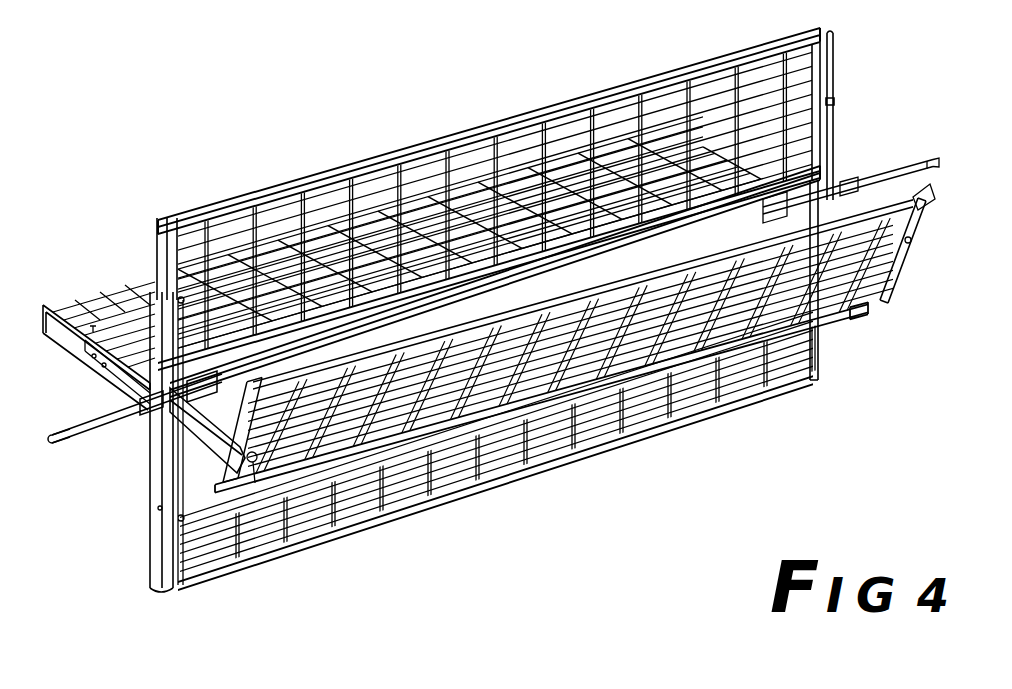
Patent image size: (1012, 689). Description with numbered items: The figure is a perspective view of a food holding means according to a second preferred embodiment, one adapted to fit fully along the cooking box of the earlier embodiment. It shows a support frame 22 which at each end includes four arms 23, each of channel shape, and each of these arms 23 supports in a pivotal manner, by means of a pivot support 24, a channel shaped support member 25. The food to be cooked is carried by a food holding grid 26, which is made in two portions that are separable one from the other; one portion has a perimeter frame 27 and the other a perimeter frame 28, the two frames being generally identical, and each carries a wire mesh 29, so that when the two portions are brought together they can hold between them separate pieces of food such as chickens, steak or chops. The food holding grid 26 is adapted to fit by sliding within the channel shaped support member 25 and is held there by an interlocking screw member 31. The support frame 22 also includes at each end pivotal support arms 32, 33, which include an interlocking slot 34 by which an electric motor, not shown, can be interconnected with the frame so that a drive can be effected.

The support frame 22 is at (170, 418).
The arms 23 is at (107, 368).
The pivot support 24 is at (187, 492).
The channel shaped support member 25 is at (183, 455).
The food holding grid 26 is at (868, 306).
The perimeter frame 27 is at (835, 327).
The perimeter frame 28 is at (873, 290).
The wire mesh 29 is at (923, 220).
The interlocking screw member 31 is at (255, 483).
The pivotal support arm 32 is at (52, 444).
The pivotal support arm 33 is at (885, 175).
The interlocking slot 34 is at (937, 161).